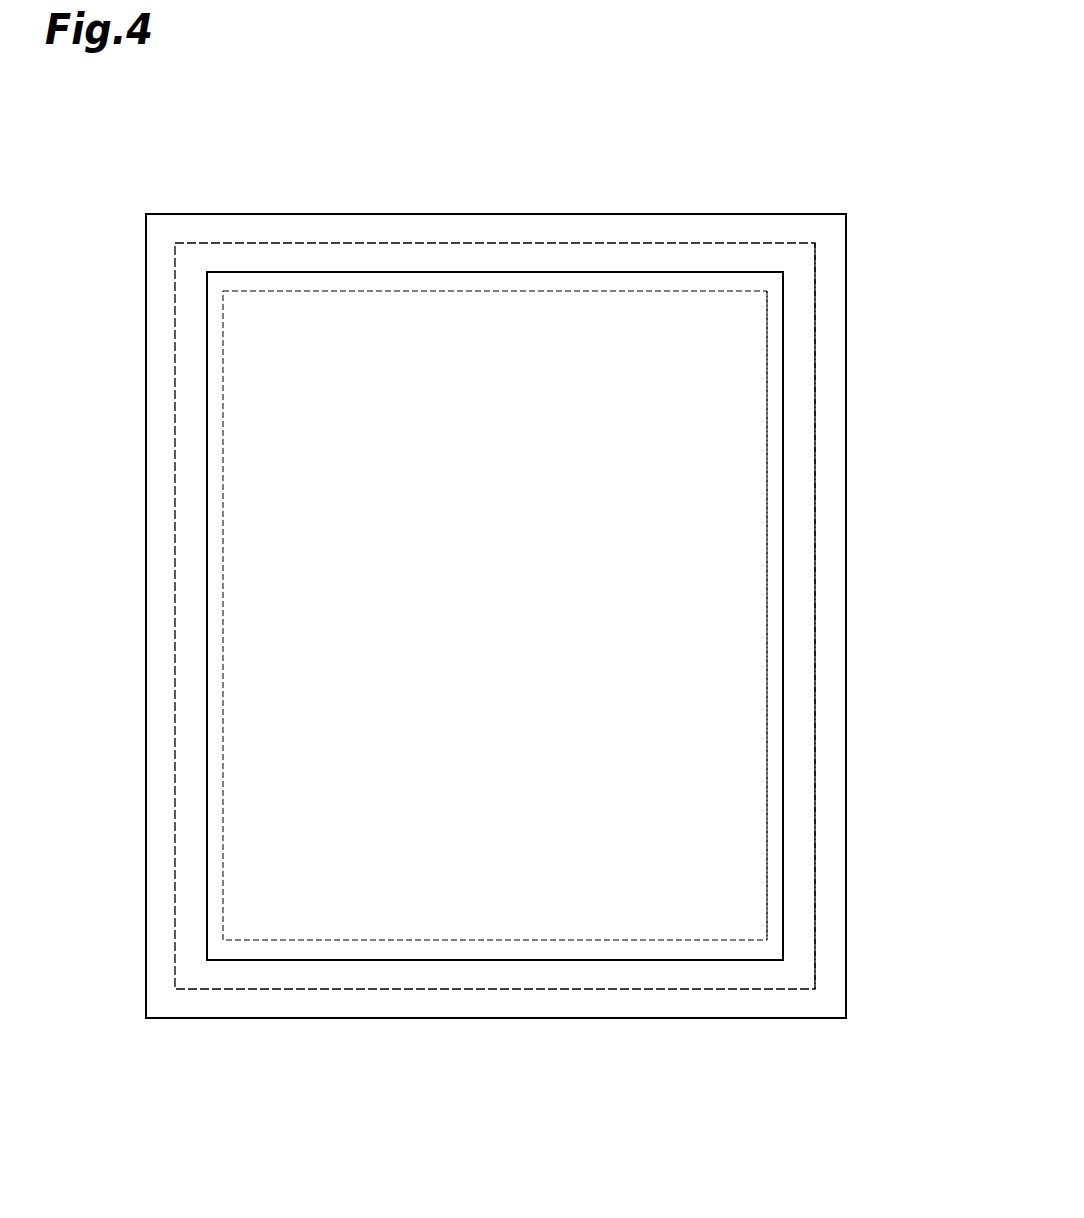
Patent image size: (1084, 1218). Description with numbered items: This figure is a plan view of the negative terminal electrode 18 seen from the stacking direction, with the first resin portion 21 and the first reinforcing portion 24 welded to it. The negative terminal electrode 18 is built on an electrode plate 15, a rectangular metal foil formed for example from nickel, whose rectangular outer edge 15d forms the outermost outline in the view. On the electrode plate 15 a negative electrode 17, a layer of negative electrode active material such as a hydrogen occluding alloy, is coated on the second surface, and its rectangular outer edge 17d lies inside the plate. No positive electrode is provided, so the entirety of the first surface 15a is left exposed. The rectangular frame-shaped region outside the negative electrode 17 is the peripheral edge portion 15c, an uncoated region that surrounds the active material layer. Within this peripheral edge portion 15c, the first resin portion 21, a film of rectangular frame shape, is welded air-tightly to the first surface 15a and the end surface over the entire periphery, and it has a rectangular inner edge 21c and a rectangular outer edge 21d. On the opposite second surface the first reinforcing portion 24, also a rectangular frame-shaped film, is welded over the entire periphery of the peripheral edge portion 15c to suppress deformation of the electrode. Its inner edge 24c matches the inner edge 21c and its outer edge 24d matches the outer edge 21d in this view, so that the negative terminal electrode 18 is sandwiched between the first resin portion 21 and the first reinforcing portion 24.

The negative terminal electrode 18 is at (788, 193).
The first resin portion 21 is at (564, 616).
The first reinforcing portion 24 is at (847, 258).
The outer edge of first resin portion 21d is at (877, 616).
The outer edge of first reinforcing portion 24d is at (847, 362).
The inner edge of first resin portion 21c is at (849, 616).
The inner edge of first reinforcing portion 24c is at (782, 468).
The electrode plate 15 is at (175, 478).
The first surface 15a is at (223, 366).
The outer edge of electrode plate 15d is at (175, 568).
The peripheral edge portion 15c is at (190, 694).
The negative electrode 17 is at (766, 775).
The outer edge of negative electrode 17d is at (766, 846).